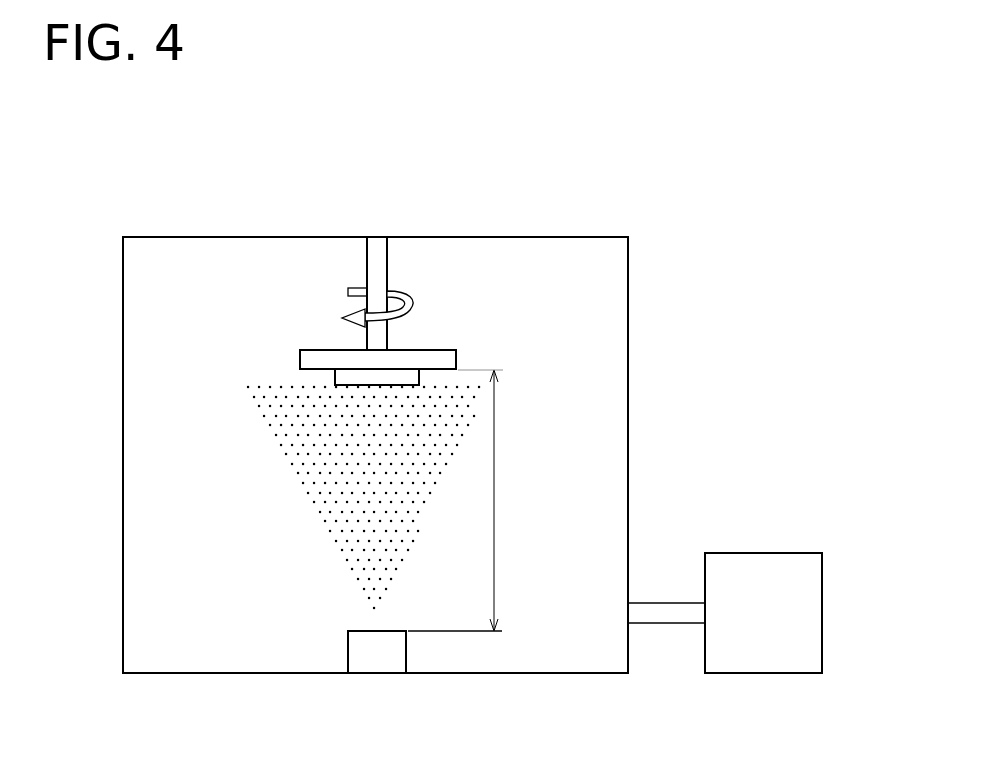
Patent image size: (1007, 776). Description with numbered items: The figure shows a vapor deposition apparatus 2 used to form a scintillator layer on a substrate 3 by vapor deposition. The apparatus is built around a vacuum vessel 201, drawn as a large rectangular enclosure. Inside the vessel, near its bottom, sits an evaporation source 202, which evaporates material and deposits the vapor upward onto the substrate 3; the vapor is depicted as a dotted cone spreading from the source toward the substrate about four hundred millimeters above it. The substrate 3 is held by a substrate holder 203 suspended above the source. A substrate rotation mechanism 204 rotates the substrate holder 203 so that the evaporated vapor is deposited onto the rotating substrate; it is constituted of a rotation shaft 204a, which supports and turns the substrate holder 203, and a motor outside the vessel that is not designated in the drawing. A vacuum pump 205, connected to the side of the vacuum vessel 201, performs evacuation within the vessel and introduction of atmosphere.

The vapor deposition apparatus 2 is at (490, 216).
The vacuum vessel 201 is at (628, 287).
The evaporation source 202 is at (405, 650).
The substrate holder 203 is at (457, 357).
The substrate rotation mechanism 204 is at (363, 293).
The rotation shaft 204a is at (312, 293).
The vacuum pump 205 is at (822, 610).
The substrate 3 is at (419, 383).